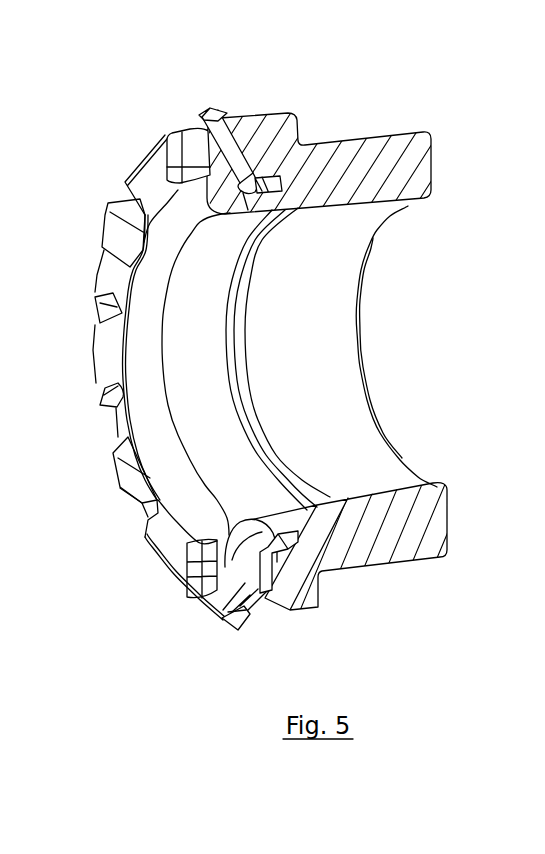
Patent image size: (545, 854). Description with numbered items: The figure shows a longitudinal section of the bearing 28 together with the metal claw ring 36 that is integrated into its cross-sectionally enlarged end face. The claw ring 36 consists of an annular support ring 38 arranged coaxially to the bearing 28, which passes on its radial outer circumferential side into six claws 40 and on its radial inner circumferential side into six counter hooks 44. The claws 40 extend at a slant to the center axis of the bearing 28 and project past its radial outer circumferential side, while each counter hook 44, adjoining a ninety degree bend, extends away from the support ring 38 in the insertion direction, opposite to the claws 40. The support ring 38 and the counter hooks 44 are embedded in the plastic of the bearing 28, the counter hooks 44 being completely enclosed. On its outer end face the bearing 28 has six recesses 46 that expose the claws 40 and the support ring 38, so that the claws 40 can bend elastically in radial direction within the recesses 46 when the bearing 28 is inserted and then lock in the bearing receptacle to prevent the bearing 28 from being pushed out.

The bearing 28 is at (350, 131).
The claw ring 36 is at (204, 108).
The support ring 38 is at (203, 590).
The claw 40 is at (232, 115).
The counter hook 44 is at (270, 187).
The recess 46 is at (190, 152).